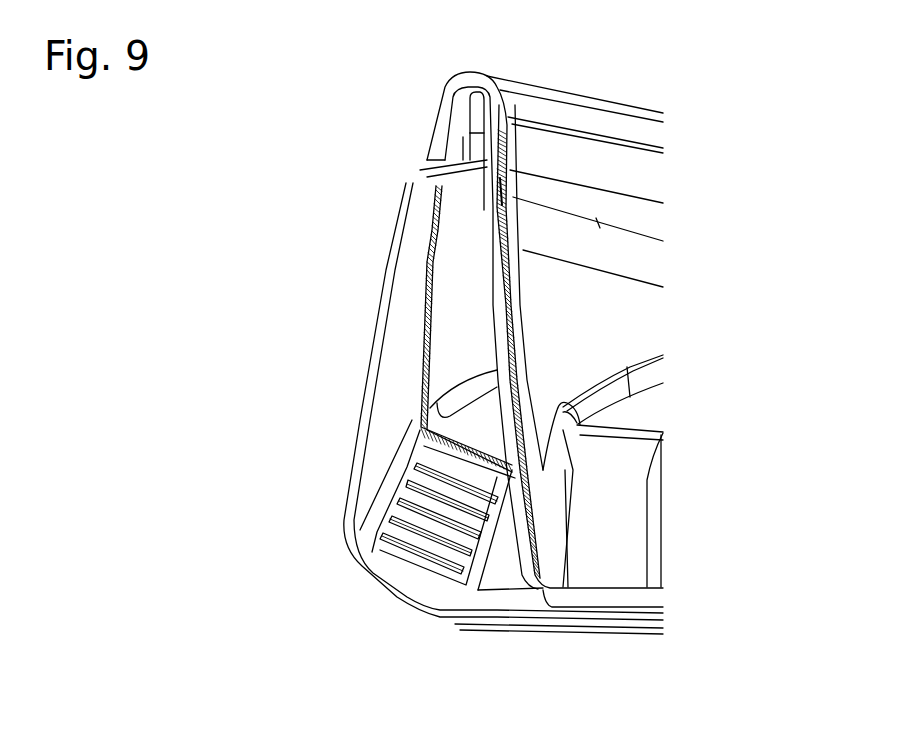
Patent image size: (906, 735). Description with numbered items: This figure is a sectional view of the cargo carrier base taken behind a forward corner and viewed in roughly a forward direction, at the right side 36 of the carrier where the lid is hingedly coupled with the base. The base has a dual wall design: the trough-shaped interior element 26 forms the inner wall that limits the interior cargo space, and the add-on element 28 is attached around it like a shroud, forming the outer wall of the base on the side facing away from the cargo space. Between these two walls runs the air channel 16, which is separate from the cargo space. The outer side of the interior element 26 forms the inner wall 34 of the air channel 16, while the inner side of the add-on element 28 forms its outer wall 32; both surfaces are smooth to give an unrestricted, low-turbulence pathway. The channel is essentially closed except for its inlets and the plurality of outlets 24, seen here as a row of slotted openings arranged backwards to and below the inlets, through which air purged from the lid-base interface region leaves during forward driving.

The air channel 16 is at (407, 350).
The outlets 24 is at (398, 503).
The interior element 26 is at (495, 152).
The add-on element 28 is at (412, 180).
The outer wall 32 is at (370, 257).
The inner wall 34 is at (494, 246).
The right side 36 is at (200, 305).